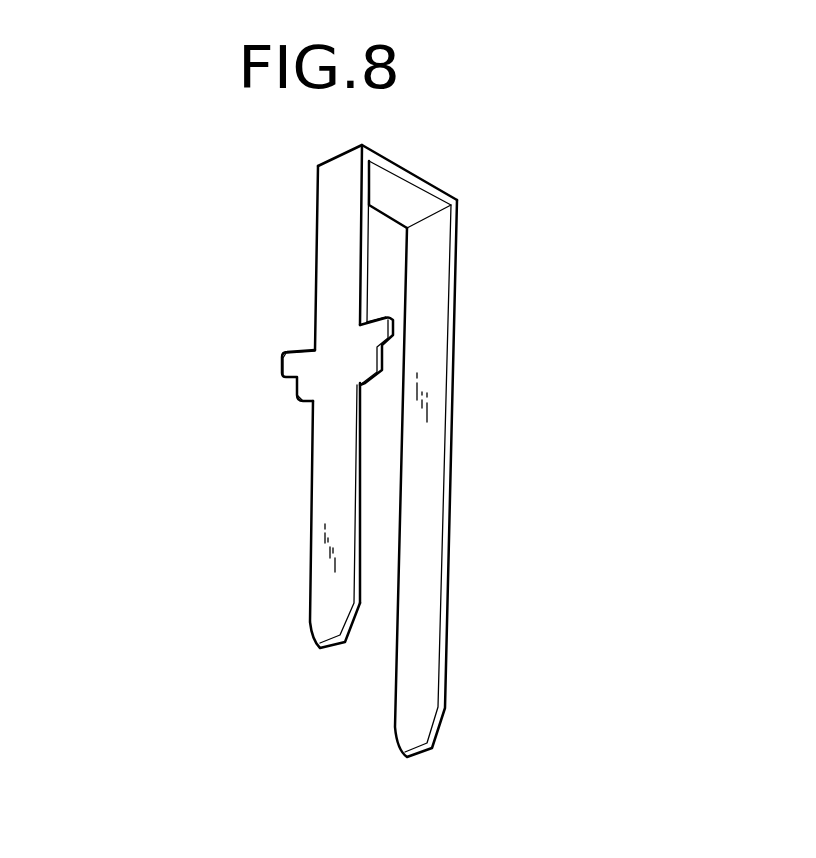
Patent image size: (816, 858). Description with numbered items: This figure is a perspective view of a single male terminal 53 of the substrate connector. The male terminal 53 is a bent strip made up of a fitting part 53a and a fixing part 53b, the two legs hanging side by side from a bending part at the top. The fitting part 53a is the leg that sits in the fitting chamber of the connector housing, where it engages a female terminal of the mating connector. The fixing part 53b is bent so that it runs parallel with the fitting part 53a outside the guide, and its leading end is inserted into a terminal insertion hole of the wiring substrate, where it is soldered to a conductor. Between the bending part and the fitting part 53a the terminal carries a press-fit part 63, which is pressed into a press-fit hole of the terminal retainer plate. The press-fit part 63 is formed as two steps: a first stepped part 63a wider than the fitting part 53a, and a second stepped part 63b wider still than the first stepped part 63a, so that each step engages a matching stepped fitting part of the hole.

The male terminal 53 is at (335, 451).
The fitting part 53a is at (228, 396).
The fixing part 53b is at (420, 547).
The press-fit part 63 is at (228, 447).
The first stepped part 63a is at (293, 397).
The second stepped part 63b is at (283, 380).